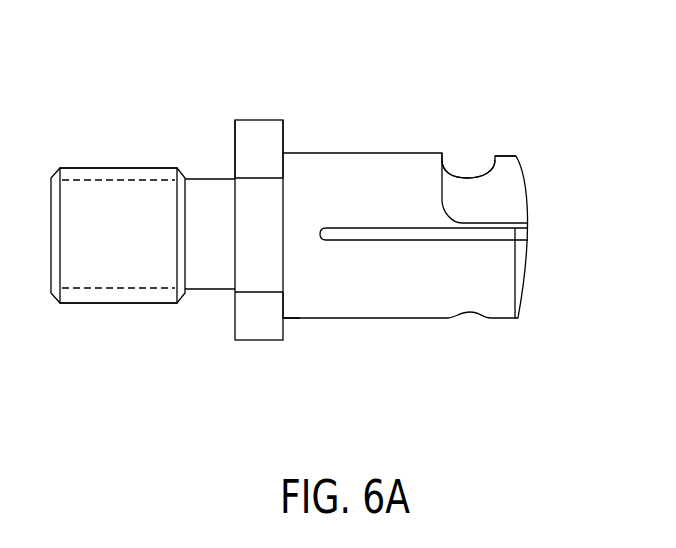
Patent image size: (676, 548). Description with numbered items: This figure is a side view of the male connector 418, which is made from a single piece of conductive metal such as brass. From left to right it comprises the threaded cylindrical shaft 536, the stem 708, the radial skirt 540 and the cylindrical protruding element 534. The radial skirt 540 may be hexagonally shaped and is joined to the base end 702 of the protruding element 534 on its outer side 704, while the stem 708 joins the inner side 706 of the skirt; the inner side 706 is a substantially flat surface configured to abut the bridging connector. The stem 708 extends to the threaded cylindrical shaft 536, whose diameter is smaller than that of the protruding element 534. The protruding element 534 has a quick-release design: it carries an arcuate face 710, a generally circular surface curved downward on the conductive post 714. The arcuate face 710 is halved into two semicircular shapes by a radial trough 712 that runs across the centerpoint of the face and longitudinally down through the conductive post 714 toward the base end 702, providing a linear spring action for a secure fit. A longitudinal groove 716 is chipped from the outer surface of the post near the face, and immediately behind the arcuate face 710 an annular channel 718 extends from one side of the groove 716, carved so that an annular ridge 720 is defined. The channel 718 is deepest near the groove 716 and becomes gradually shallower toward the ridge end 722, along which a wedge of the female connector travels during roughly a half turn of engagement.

The male connector 418 is at (436, 399).
The cylindrical protruding element 534 is at (478, 357).
The threaded cylindrical shaft 536 is at (115, 303).
The radial skirt 540 is at (260, 340).
The base end 702 is at (284, 318).
The outer side 704 is at (285, 135).
The inner side 706 is at (235, 133).
The stem 708 is at (212, 179).
The arcuate face 710 is at (528, 208).
The radial trough 712 is at (503, 243).
The conductive post 714 is at (385, 318).
The longitudinal groove 716 is at (477, 207).
The annular channel 718 is at (454, 167).
The annular ridge 720 is at (508, 156).
The ridge end 722 is at (470, 318).